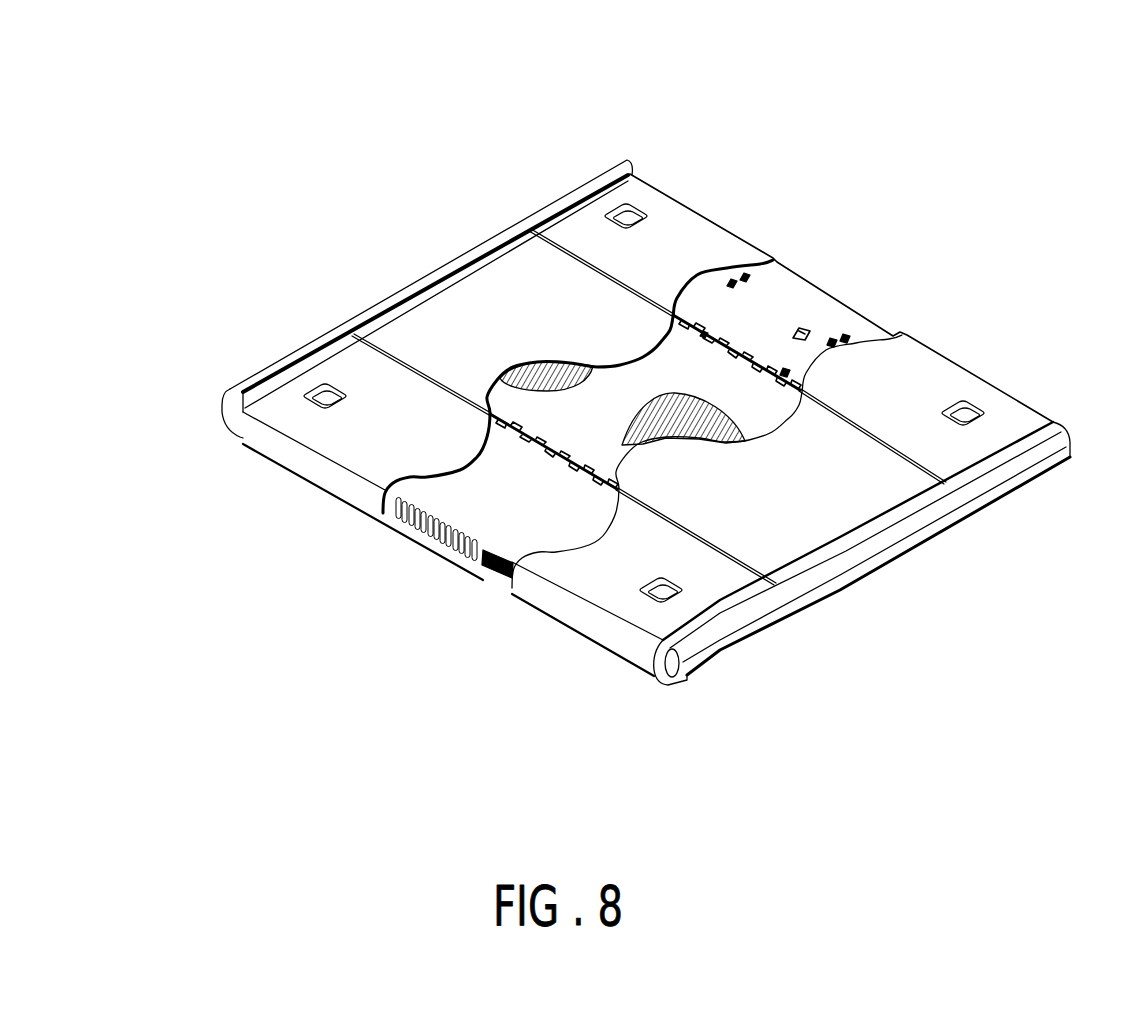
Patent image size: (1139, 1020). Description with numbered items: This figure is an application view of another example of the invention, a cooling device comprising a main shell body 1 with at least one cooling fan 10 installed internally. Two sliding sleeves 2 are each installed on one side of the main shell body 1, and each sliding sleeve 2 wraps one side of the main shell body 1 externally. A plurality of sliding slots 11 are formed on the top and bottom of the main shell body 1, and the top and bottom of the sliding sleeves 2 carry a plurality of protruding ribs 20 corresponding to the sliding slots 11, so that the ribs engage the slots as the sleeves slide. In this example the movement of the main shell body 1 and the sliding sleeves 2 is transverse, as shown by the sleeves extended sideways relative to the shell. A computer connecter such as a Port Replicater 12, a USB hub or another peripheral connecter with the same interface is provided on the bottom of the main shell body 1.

The main shell body 1 is at (470, 312).
The sliding sleeve 2 is at (777, 502).
The cooling fan 10 is at (548, 382).
The sliding slot 11 is at (296, 362).
The Port Replicater 12 is at (807, 330).
The protruding rib 20 is at (858, 430).